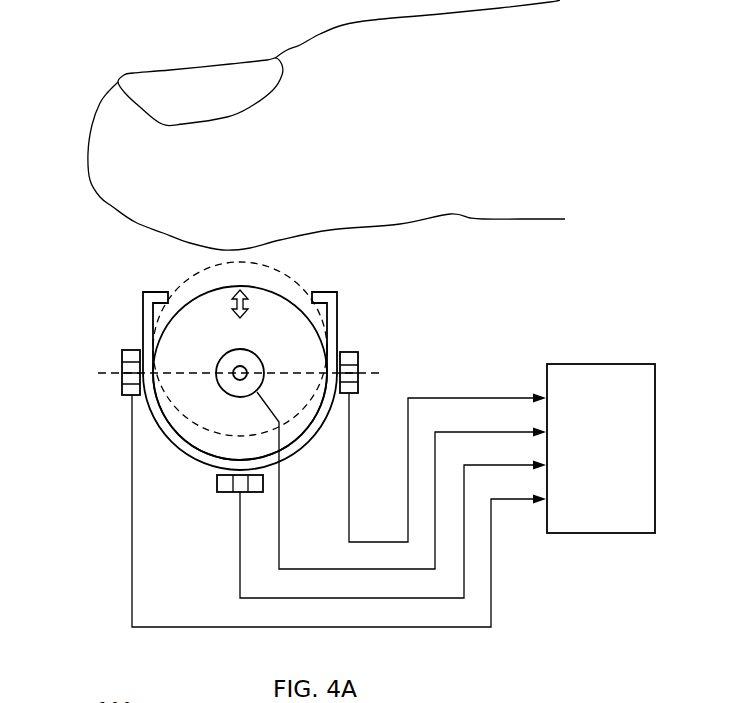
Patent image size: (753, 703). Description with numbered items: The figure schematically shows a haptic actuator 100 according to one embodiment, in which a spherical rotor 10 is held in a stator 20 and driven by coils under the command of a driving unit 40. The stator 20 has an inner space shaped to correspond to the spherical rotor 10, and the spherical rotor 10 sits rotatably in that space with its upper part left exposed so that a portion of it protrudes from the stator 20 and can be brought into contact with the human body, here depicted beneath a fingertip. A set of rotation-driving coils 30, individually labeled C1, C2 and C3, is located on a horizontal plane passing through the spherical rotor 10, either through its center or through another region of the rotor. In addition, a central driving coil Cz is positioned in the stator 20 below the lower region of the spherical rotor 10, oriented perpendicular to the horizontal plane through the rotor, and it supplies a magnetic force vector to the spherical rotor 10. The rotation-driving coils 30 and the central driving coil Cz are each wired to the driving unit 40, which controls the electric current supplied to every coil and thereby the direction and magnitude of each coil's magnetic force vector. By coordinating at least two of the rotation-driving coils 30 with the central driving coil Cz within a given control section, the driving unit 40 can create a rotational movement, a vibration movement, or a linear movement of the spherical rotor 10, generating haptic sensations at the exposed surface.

The haptic actuator 100 is at (135, 30).
The spherical rotor 10 is at (313, 314).
The stator 20 is at (143, 298).
The rotation-driving coils 30 is at (37, 383).
The first coil C1 is at (122, 384).
The second coil C2 is at (217, 385).
The third coil C3 is at (340, 385).
The central driving coil Cz is at (218, 484).
The driving unit 40 is at (657, 390).